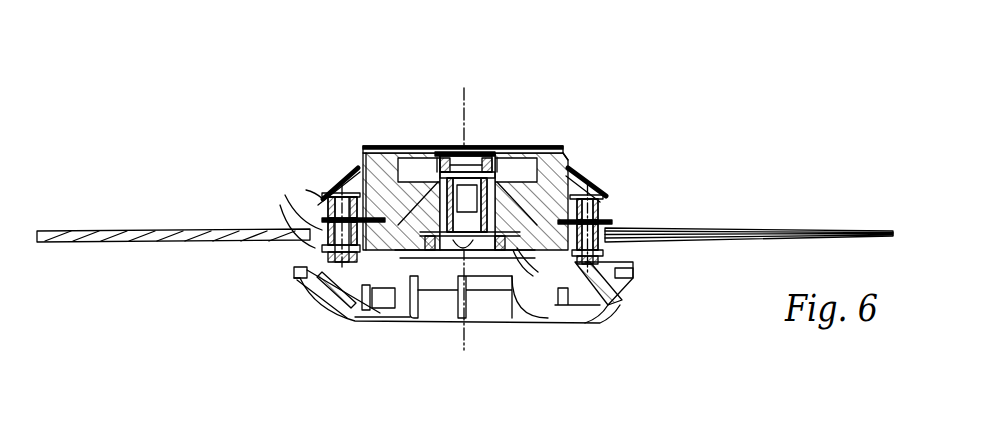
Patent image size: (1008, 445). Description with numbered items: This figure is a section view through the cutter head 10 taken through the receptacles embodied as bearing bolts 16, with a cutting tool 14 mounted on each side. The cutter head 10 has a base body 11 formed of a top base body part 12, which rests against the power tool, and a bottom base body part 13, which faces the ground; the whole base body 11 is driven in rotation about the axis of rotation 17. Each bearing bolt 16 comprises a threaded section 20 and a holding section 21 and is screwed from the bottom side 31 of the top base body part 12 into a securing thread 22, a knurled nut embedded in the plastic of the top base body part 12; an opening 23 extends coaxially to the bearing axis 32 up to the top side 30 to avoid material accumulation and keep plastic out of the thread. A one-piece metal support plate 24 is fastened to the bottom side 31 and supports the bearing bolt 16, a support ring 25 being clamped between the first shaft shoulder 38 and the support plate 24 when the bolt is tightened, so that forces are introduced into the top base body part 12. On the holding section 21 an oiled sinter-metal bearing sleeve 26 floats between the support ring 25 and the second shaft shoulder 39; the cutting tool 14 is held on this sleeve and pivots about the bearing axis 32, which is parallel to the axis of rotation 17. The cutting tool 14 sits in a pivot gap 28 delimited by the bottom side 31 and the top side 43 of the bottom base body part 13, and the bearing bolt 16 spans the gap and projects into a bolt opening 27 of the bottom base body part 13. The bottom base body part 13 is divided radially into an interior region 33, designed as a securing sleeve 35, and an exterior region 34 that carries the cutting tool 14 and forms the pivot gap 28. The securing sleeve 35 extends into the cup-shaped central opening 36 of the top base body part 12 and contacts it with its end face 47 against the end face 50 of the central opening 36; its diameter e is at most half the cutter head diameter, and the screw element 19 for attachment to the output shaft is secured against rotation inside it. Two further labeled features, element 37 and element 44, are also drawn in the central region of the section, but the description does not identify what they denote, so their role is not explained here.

The cutter head 10 is at (276, 108).
The base body 11 is at (616, 184).
The top base body part 12 is at (580, 155).
The bottom base body part 13 is at (613, 318).
The cutting tool 14 is at (147, 230).
The bearing bolt 16 is at (296, 270).
The axis of rotation 17 is at (467, 107).
The screw element 19 is at (408, 162).
The threaded section 20 is at (328, 193).
The holding section 21 is at (316, 222).
The securing thread 22 is at (314, 198).
The opening 23 is at (334, 192).
The support plate 24 is at (351, 192).
The support ring 25 is at (300, 215).
The bearing sleeve 26 is at (308, 240).
The bolt opening 27 is at (316, 250).
The pivot gap 28 is at (627, 225).
The top side 30 is at (376, 146).
The bottom side 31 is at (332, 306).
The bearing axis 32 is at (606, 160).
The interior region 33 is at (437, 262).
The exterior region 34 is at (302, 282).
The securing sleeve 35 is at (565, 147).
The central opening 36 is at (537, 158).
The bottom plate 37 is at (409, 280).
The first shaft shoulder 38 is at (610, 200).
The second shaft shoulder 39 is at (642, 232).
The top side 43 is at (388, 282).
The threaded shaft 44 is at (478, 151).
The end face 47 is at (515, 150).
The end face 50 is at (446, 164).
The diameter e is at (505, 150).